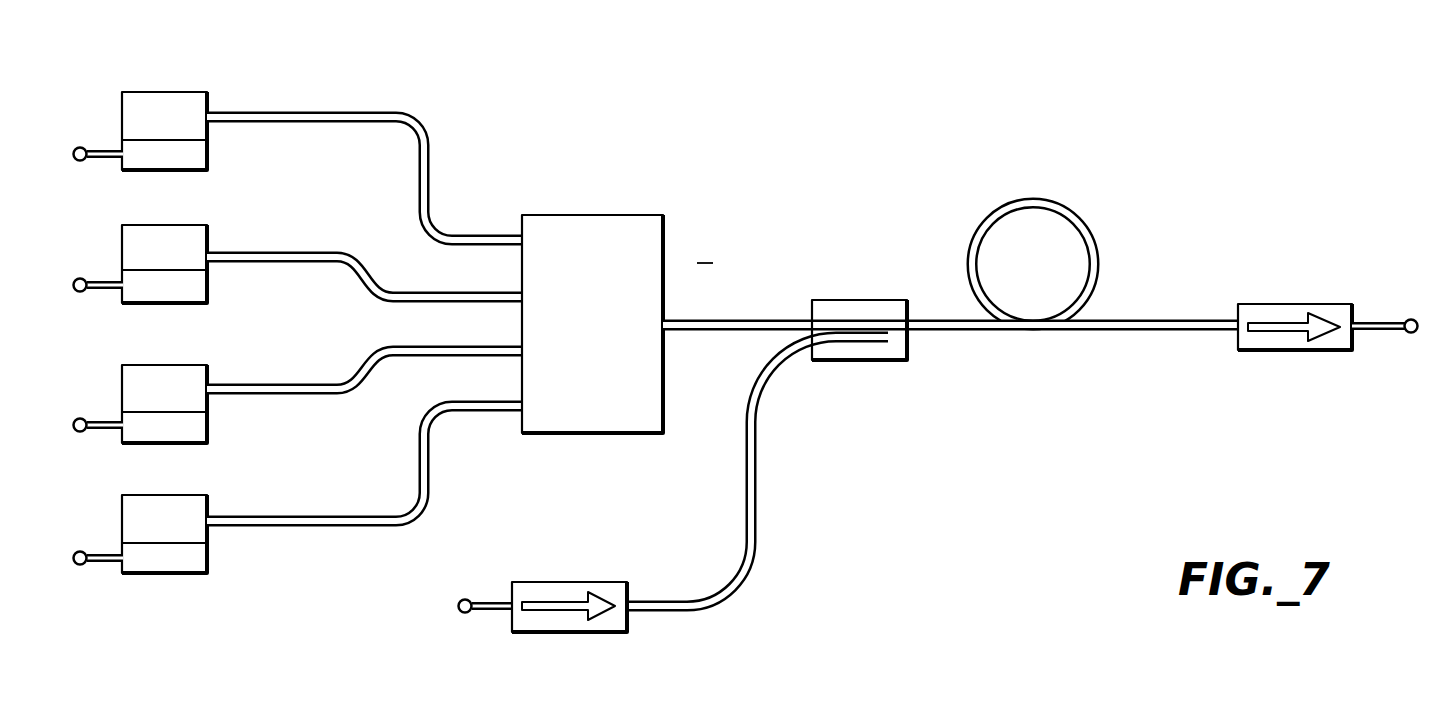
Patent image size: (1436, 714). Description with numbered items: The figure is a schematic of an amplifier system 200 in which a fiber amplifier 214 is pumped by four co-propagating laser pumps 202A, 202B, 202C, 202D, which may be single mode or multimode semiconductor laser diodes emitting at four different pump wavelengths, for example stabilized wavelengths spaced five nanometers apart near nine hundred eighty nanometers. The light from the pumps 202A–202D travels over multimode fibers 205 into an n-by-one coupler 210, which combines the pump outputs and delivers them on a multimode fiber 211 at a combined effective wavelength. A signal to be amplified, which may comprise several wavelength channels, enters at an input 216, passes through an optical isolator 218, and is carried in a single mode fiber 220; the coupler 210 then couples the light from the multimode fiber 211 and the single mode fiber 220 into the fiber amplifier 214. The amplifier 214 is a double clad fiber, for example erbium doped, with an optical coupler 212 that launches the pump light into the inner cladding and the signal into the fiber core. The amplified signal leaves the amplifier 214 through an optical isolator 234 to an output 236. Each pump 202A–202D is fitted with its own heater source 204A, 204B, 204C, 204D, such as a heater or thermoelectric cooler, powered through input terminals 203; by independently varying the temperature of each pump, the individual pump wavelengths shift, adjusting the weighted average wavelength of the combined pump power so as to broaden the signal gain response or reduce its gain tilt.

The amplifier system 200 is at (857, 152).
The laser pump 202A is at (188, 92).
The laser pump 202B is at (188, 225).
The laser pump 202C is at (188, 365).
The laser pump 202D is at (188, 495).
The input terminals 203 is at (103, 160).
The heater source 204A is at (208, 150).
The heater source 204B is at (208, 280).
The heater source 204C is at (208, 422).
The heater source 204D is at (208, 553).
The multimode fibers 205 is at (433, 157).
The n×1 coupler 210 is at (562, 215).
The multimode fiber 211 is at (680, 333).
The optical coupler 212 is at (866, 300).
The fiber amplifier 214 is at (1025, 200).
The input 216 is at (468, 597).
The optical isolator 218 is at (565, 582).
The single mode fiber 220 is at (758, 460).
The optical isolator 234 is at (1293, 350).
The output 236 is at (1410, 318).